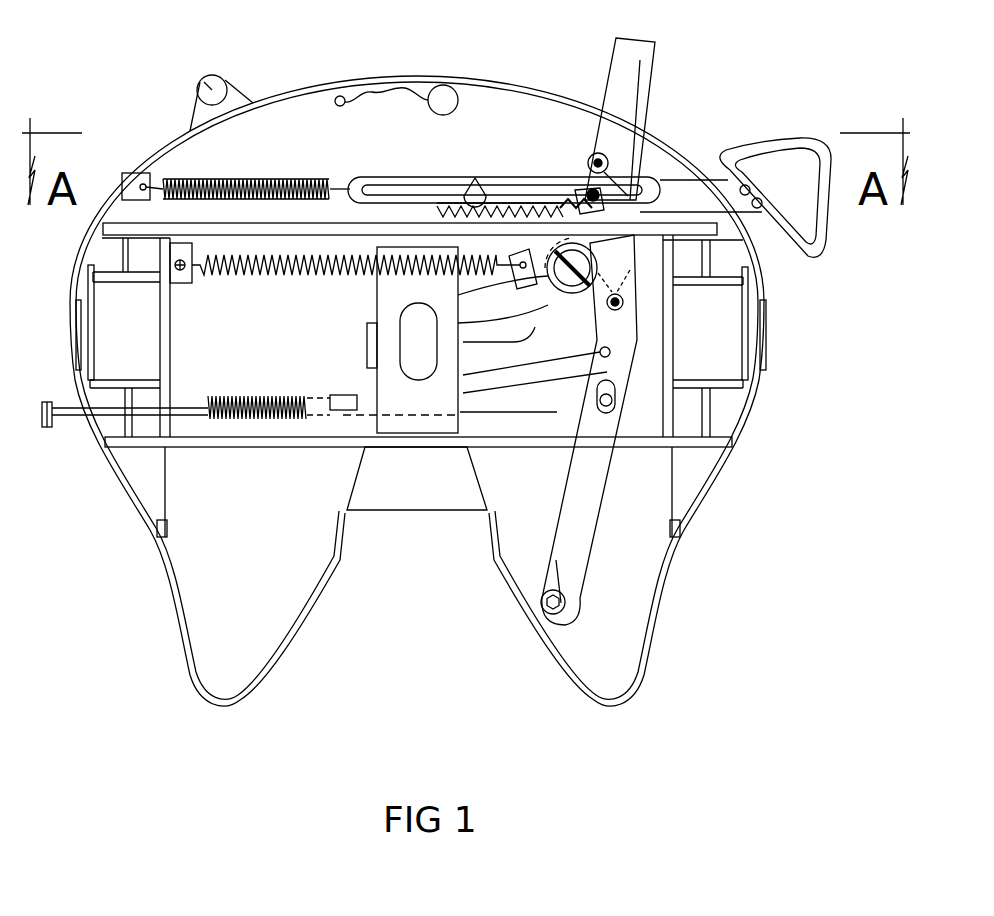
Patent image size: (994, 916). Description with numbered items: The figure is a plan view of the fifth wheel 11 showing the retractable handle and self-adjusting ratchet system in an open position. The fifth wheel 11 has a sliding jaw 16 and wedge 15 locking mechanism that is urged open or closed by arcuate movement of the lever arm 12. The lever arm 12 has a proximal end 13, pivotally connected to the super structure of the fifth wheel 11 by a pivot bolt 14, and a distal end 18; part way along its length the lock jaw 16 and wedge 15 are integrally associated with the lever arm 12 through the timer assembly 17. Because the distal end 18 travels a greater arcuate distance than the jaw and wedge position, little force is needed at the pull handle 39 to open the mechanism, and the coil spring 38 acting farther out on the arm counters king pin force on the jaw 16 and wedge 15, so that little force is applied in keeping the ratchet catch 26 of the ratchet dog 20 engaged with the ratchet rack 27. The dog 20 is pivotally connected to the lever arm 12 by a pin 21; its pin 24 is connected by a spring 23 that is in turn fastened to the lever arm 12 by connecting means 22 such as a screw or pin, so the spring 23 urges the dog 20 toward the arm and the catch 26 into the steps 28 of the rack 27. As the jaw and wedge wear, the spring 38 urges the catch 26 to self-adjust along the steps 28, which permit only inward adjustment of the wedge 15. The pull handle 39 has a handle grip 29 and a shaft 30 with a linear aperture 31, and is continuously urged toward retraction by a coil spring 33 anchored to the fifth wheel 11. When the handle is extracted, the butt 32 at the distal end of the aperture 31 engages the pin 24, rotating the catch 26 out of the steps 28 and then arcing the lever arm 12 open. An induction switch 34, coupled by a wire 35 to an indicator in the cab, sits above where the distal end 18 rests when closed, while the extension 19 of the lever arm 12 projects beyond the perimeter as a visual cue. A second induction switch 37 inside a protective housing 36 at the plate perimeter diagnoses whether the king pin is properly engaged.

The fifth wheel 11 is at (690, 518).
The lever arm 12 is at (583, 512).
The proximal end 13 is at (578, 570).
The pivot bolt 14 is at (565, 605).
The wedge 15 is at (548, 420).
The sliding jaw 16 is at (462, 378).
The timer assembly 17 is at (580, 358).
The distal end 18 is at (650, 95).
The extension 19 is at (623, 62).
The ratchet dog 20 is at (640, 168).
The pin 21 is at (596, 155).
The connecting means 22 is at (565, 203).
The spring 23 is at (581, 200).
The pin 24 is at (600, 205).
The ratchet catch 26 is at (670, 210).
The ratchet rack 27 is at (448, 208).
The steps 28 is at (475, 178).
The handle grip 29 is at (830, 222).
The shaft 30 is at (393, 177).
The linear aperture 31 is at (432, 180).
The butt 32 is at (366, 177).
The coil spring 33 is at (262, 178).
The induction switch 34 is at (450, 88).
The wire 35 is at (376, 93).
The protective housing 36 is at (250, 75).
The second induction switch 37 is at (200, 88).
The coil spring 38 is at (270, 276).
The pull handle 39 is at (760, 188).